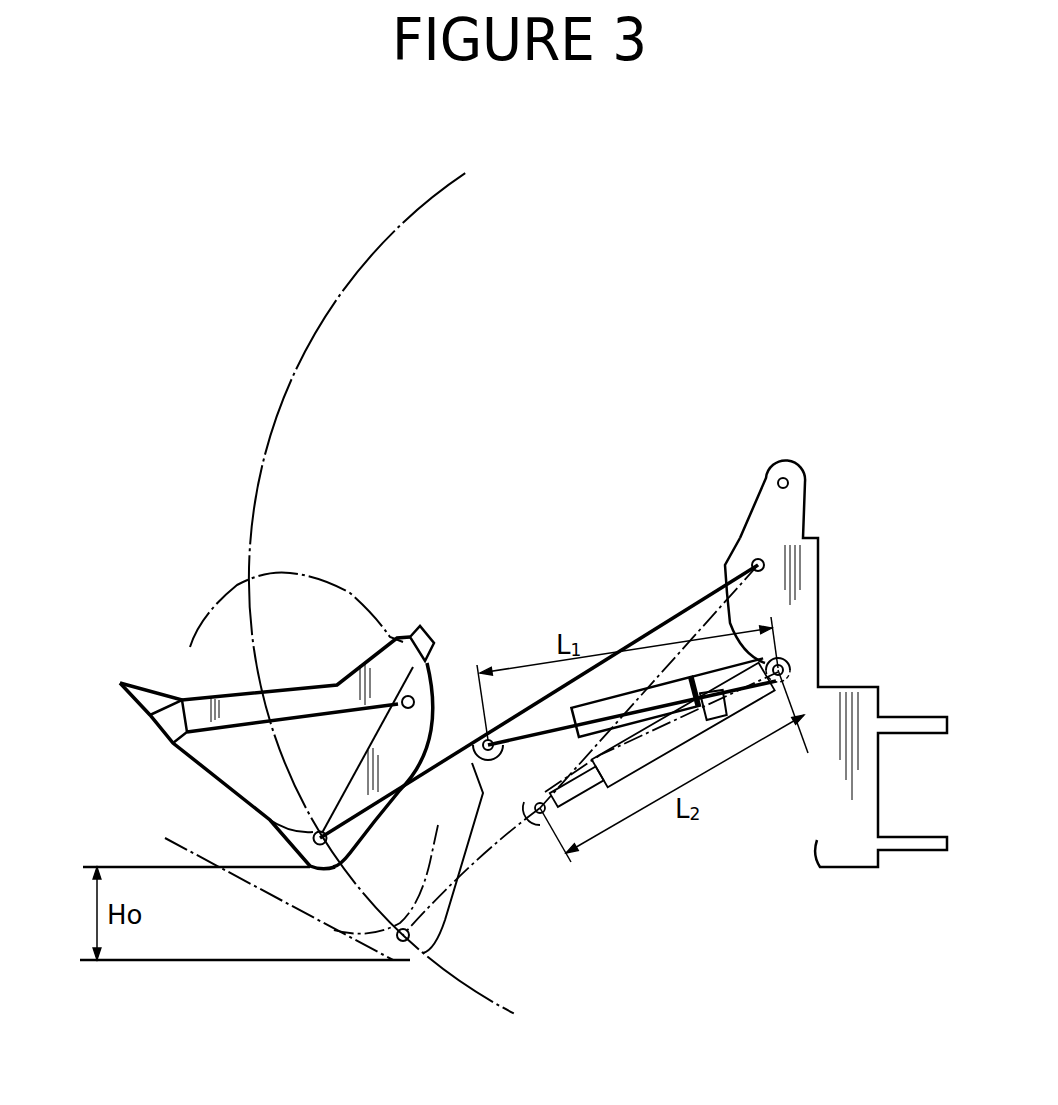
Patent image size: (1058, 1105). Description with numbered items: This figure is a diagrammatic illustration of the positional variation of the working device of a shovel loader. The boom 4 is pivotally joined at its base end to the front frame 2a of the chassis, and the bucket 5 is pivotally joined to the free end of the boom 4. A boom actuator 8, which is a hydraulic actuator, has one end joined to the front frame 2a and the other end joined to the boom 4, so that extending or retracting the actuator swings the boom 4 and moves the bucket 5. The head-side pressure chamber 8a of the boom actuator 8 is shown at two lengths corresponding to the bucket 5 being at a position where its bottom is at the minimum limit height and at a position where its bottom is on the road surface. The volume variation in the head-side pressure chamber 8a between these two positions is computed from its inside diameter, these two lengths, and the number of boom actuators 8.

The front frame 2a is at (862, 692).
The boom 4 is at (652, 633).
The bucket 5 is at (222, 757).
The boom actuator 8 is at (607, 700).
The head-side pressure chamber 8a is at (712, 690).